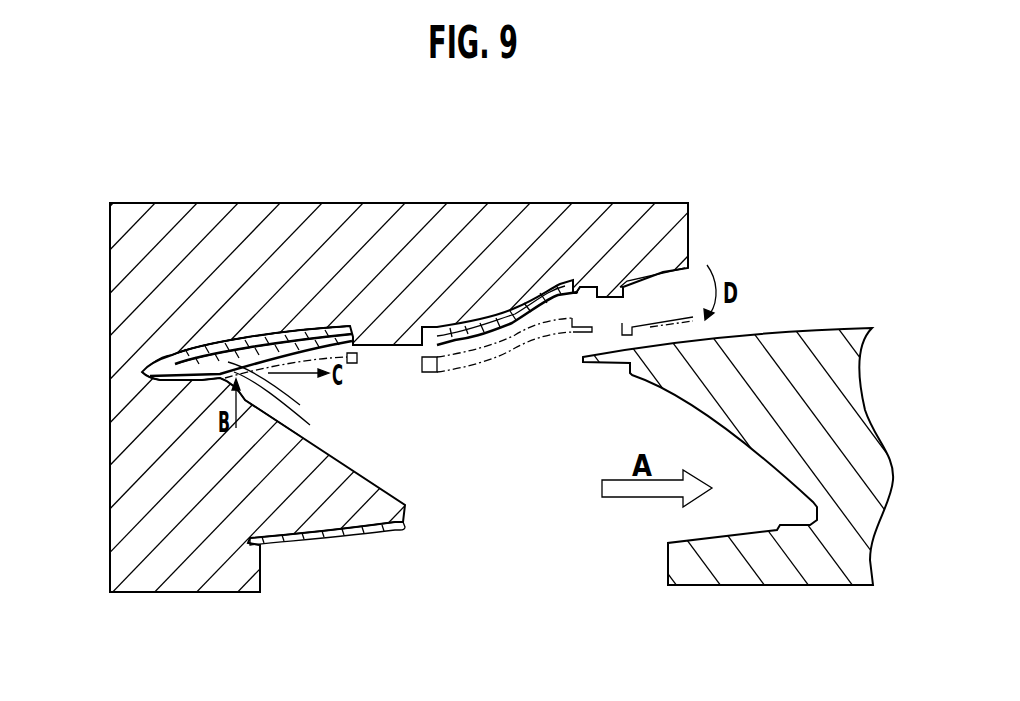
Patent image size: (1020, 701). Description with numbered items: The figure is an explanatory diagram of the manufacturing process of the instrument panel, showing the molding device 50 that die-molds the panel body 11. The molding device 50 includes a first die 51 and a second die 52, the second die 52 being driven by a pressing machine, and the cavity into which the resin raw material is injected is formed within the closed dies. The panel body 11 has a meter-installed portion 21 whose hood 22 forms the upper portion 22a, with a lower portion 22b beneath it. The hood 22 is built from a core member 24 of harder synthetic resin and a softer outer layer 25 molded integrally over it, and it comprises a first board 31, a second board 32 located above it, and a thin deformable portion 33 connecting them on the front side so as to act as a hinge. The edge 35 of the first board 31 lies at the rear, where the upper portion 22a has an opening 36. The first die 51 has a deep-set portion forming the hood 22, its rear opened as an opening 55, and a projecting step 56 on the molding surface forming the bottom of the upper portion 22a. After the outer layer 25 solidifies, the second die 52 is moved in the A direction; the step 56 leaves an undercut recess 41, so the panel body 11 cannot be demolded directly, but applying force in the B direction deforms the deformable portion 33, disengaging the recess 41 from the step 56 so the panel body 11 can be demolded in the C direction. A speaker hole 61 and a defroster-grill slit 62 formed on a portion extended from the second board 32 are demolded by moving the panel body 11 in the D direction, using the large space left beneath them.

The panel body 11 is at (212, 348).
The meter-installed portion 21 is at (213, 389).
The hood 22 is at (172, 342).
The upper portion 22a is at (172, 345).
The lower portion 22b is at (280, 540).
The core member 24 is at (283, 343).
The outer layer 25 is at (237, 350).
The first board 31 is at (180, 379).
The second board 32 is at (312, 338).
The deformable portion 33 is at (170, 357).
The edge 35 is at (278, 419).
The opening 36 is at (240, 362).
The recess 41 is at (197, 385).
The molding device 50 is at (645, 175).
The first die 51 is at (532, 203).
The second die 52 is at (727, 585).
The opening 55 is at (232, 370).
The step 56 is at (187, 384).
The speaker hole 61 is at (345, 326).
The defroster-grill slit 62 is at (600, 287).